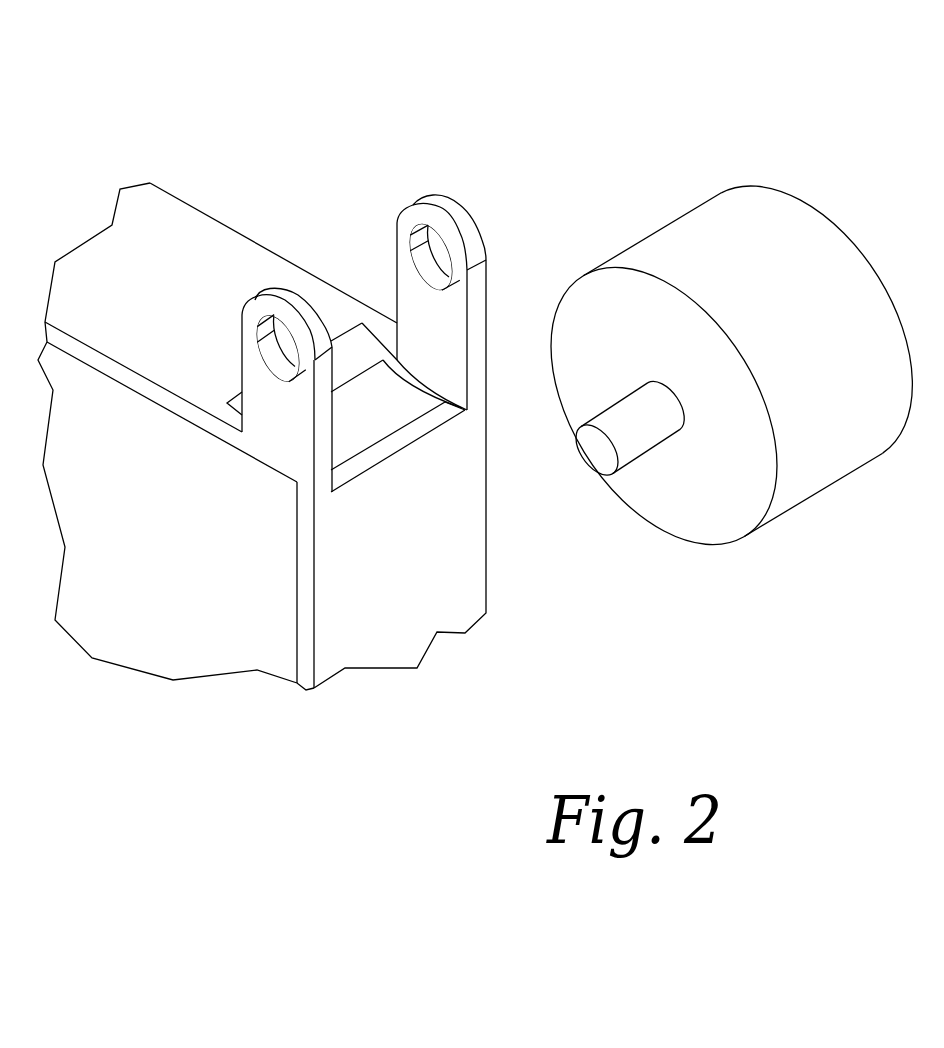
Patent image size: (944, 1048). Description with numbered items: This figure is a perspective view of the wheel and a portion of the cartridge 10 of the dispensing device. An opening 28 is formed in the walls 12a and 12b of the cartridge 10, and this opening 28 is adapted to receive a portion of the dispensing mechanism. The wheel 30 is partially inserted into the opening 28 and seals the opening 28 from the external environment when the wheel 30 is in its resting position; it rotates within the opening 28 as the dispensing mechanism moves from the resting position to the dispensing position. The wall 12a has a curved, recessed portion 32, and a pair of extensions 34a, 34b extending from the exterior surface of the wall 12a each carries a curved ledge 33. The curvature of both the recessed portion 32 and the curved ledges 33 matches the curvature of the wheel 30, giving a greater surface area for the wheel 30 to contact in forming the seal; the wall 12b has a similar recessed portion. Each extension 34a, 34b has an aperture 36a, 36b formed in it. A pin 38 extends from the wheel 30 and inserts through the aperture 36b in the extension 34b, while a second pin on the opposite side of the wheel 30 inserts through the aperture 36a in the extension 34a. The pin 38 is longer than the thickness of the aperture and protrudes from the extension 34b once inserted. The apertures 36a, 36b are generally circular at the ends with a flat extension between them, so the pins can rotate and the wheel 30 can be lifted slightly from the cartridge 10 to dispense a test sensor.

The cartridge 10 is at (108, 88).
The wall 12a is at (202, 210).
The wall 12b is at (487, 580).
The opening 28 is at (404, 416).
The wheel 30 is at (785, 202).
The curved, recessed portion 32 is at (343, 347).
The curved ledge 33 is at (392, 356).
The extension 34a is at (445, 210).
The extension 34b is at (283, 448).
The aperture 36a is at (494, 209).
The aperture 36b is at (272, 380).
The pin 38 is at (594, 456).